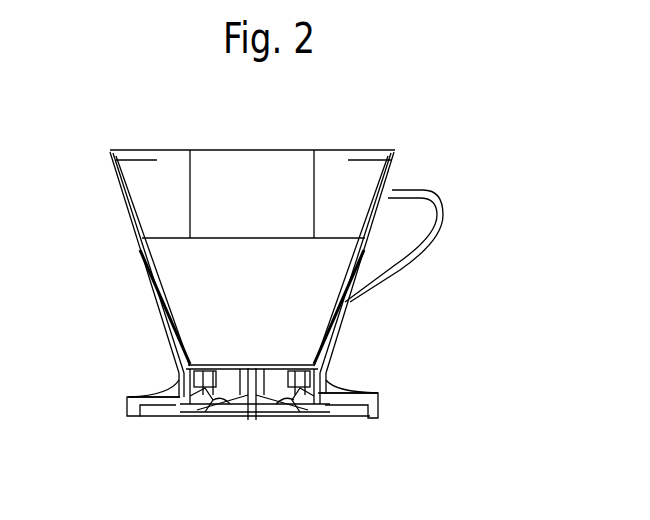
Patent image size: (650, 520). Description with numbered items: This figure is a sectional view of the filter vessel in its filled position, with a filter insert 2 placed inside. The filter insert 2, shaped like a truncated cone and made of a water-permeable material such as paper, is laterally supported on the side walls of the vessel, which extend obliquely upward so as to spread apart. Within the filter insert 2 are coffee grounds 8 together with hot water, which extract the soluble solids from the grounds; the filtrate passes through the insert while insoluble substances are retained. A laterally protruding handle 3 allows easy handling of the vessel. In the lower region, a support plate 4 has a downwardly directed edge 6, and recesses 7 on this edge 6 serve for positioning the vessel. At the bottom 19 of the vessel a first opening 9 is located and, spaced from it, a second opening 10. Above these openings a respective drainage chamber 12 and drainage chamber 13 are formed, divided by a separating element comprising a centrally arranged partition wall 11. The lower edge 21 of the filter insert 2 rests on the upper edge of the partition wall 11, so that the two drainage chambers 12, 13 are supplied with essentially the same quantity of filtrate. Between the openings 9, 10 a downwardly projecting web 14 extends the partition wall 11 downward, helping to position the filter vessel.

The filter insert 2 is at (327, 170).
The handle 3 is at (443, 220).
The coffee grounds 8 is at (296, 293).
The support plate 4 is at (330, 397).
The downwardly directed edge 6 is at (370, 413).
The recesses 7 is at (152, 418).
The first opening 9 is at (205, 413).
The second opening 10 is at (300, 418).
The partition wall 11 is at (250, 415).
The drainage chamber 12 is at (183, 391).
The drainage chamber 13 is at (318, 380).
The downwardly projecting web 14 is at (254, 415).
The bottom 19 is at (218, 413).
The lower edge 21 is at (177, 363).